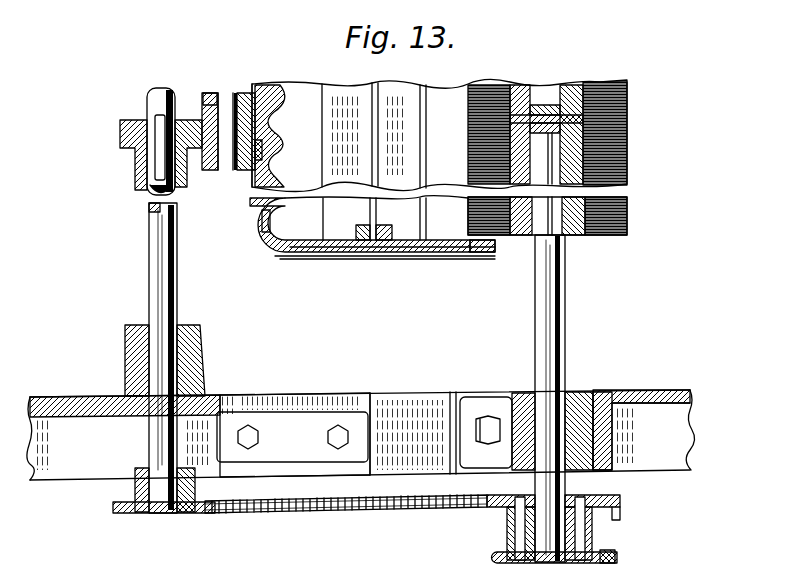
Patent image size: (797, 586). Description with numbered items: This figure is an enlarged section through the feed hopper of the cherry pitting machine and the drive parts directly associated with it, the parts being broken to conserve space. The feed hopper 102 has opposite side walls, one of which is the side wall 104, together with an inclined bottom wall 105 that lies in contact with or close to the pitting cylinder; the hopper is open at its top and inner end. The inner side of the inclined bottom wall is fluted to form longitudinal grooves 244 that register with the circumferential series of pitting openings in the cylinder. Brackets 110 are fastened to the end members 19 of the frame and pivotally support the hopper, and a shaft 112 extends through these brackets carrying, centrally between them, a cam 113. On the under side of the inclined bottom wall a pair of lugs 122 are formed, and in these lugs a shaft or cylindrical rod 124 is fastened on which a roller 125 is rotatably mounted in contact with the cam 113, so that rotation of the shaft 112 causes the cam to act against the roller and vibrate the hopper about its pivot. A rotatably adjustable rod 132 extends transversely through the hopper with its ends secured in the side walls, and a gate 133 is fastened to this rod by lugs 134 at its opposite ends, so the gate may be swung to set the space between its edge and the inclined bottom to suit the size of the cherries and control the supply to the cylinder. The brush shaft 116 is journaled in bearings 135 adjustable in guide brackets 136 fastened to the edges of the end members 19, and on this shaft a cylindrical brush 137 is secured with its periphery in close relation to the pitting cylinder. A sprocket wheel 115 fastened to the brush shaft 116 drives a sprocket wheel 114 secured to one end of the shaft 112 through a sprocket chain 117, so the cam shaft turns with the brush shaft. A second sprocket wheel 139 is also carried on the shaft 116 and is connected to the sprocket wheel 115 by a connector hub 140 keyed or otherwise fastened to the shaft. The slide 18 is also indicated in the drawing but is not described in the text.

The roller 125 is at (215, 86).
The cam 113 is at (118, 172).
The lugs 122 is at (266, 150).
The longitudinal grooves 244 is at (268, 150).
The shaft or cylindrical rod 124 is at (232, 194).
The gate 133 is at (456, 169).
The cylindrical brush 137 is at (666, 228).
The inclined bottom wall 105 is at (250, 220).
The rotatably adjustable rod 132 is at (366, 213).
The lugs 134 is at (458, 232).
The feed hopper 102 is at (372, 282).
The side wall 104 is at (445, 278).
The shaft 112 is at (136, 247).
The brush shaft 116 is at (600, 309).
The brackets 110 is at (96, 392).
The slide 18 is at (432, 384).
The bearings 135 is at (520, 384).
The end members 19 is at (652, 380).
The guide brackets 136 is at (656, 452).
The sprocket wheel 114 is at (145, 542).
The sprocket chain 117 is at (356, 537).
The connector hub 140 is at (492, 544).
The sprocket wheel 115 is at (646, 534).
The second sprocket wheel 139 is at (517, 582).